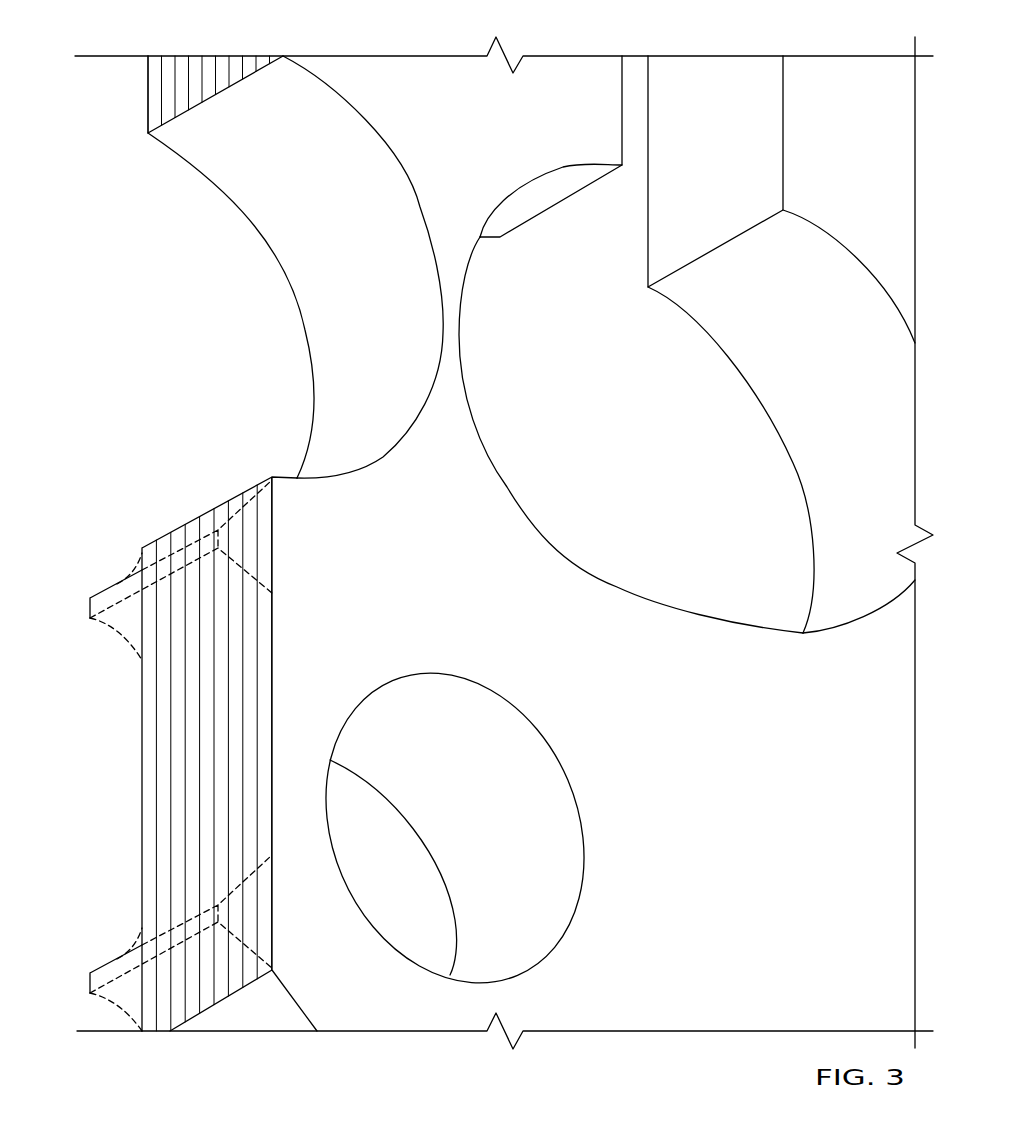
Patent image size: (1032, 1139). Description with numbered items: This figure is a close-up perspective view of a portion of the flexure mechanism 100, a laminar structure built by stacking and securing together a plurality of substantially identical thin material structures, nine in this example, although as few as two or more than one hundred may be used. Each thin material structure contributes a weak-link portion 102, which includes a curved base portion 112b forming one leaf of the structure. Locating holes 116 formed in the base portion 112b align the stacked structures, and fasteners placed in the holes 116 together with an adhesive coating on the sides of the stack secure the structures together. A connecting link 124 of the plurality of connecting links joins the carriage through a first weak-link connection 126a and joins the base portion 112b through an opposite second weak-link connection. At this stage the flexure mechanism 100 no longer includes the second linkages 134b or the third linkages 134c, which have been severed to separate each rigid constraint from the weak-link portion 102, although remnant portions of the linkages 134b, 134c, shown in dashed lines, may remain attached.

The flexure mechanism 100 is at (148, 37).
The weak-link portion 102 is at (111, 1073).
The base portion 112b is at (637, 1000).
The locating holes 116 is at (380, 940).
The connecting link 124 is at (440, 80).
The first weak-link connection 126a is at (332, 367).
The second linkages 134b is at (112, 560).
The third linkages 134c is at (112, 935).